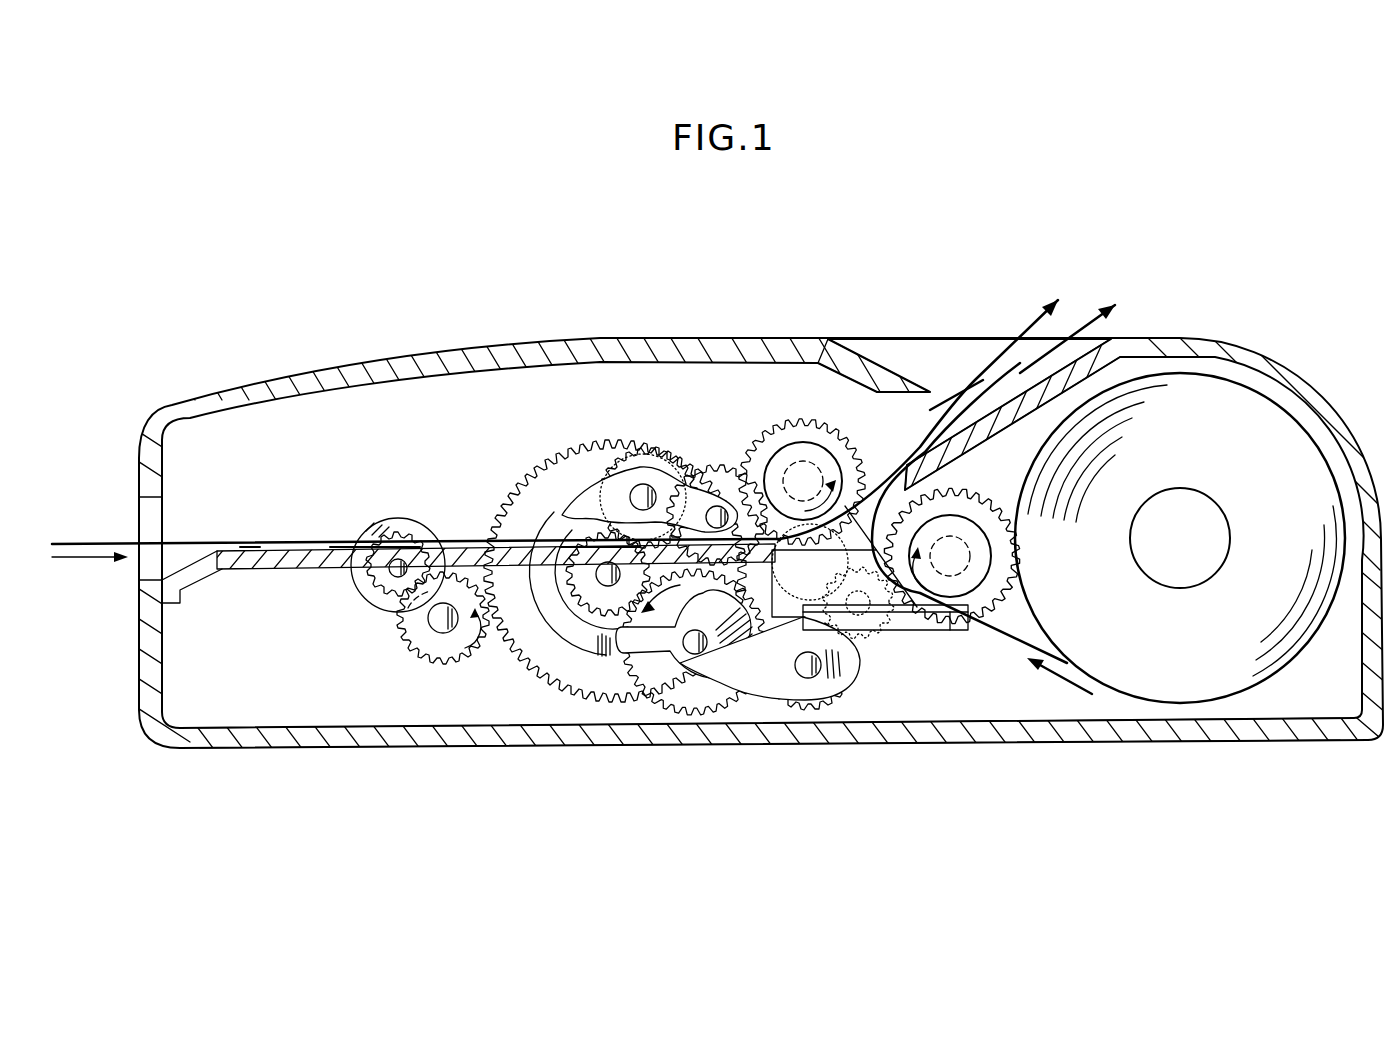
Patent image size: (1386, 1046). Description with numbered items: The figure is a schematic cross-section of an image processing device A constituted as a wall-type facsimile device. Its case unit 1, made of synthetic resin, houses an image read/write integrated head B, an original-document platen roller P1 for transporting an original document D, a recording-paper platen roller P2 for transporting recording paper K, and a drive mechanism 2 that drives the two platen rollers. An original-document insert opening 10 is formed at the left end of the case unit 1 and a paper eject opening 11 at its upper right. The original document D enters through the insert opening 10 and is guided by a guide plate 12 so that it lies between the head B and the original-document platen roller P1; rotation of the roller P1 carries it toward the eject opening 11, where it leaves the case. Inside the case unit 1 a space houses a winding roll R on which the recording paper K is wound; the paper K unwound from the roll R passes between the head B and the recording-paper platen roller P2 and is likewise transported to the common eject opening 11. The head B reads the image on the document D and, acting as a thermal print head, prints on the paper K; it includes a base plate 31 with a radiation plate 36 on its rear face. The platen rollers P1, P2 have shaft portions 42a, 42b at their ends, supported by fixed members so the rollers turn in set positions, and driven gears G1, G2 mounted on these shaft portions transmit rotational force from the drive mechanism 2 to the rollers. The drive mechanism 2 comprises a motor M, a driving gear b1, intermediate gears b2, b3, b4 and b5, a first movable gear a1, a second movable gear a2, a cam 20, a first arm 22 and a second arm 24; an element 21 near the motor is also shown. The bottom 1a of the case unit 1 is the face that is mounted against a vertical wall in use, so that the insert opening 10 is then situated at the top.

The case unit 1 is at (625, 350).
The bottom 1a is at (1006, 740).
The original-document insert opening 10 is at (147, 512).
The paper eject opening 11 is at (945, 385).
The guide plate 12 is at (300, 563).
The drive mechanism 2 is at (542, 460).
The cam 20 is at (722, 633).
The motor shaft 21 is at (392, 590).
The first arm 22 is at (537, 518).
The second arm 24 is at (788, 673).
The base plate 31 is at (950, 617).
The radiation plate 36 is at (928, 623).
The shaft portion 42a is at (801, 466).
The shaft portion 42b is at (975, 547).
The image processing device A is at (1245, 265).
The image read/write integrated head B is at (913, 645).
The original document D is at (105, 543).
The driven gear G1 is at (840, 442).
The driven gear G2 is at (993, 588).
The recording paper K is at (1000, 638).
The motor M is at (388, 524).
The original-document platen roller P1 is at (785, 468).
The recording-paper platen roller P2 is at (985, 562).
The winding roll R is at (1267, 428).
The first movable gear a1 is at (728, 490).
The second movable gear a2 is at (866, 640).
The driving gear b1 is at (394, 588).
The intermediate gear b2 is at (445, 657).
The intermediate gear b3 is at (528, 657).
The intermediate gear b4 is at (601, 597).
The intermediate gear b5 is at (612, 466).